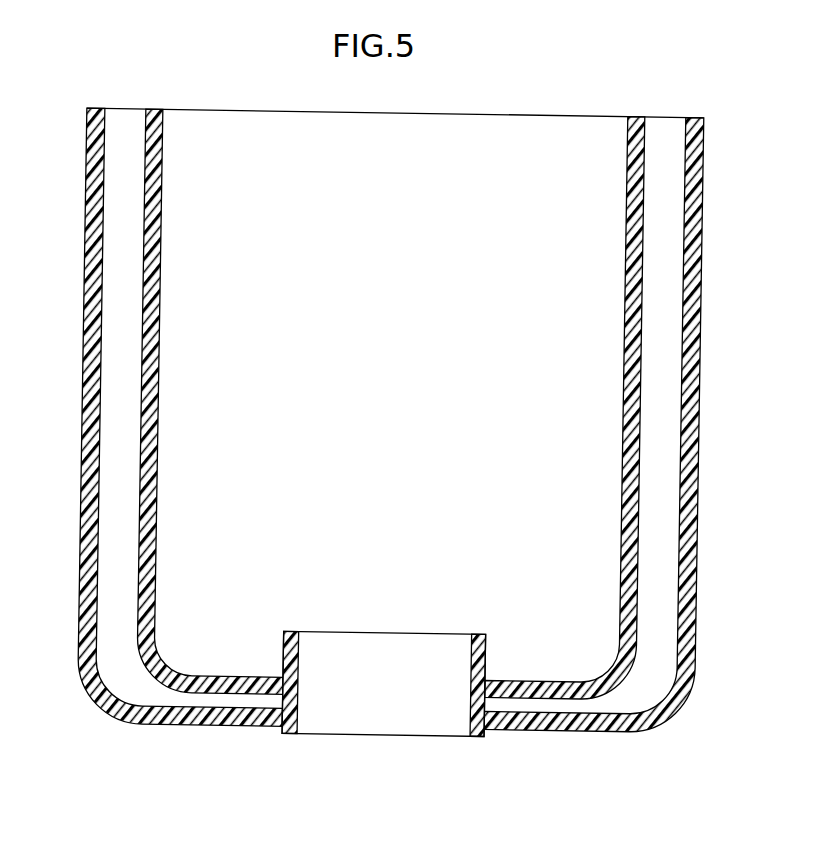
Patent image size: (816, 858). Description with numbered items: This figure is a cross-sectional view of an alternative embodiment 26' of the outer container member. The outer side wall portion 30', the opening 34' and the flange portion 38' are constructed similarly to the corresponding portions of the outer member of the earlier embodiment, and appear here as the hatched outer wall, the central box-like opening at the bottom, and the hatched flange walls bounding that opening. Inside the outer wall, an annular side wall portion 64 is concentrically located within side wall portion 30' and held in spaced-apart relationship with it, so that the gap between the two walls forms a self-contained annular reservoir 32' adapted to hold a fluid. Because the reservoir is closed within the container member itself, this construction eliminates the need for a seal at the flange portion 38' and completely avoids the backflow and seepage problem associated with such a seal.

The outer container member 26' is at (400, 465).
The side wall portion 30' is at (364, 420).
The annular reservoir 32' is at (395, 173).
The annular side wall portion 64 is at (154, 328).
The opening 34' is at (389, 726).
The flange portion 38' is at (412, 678).